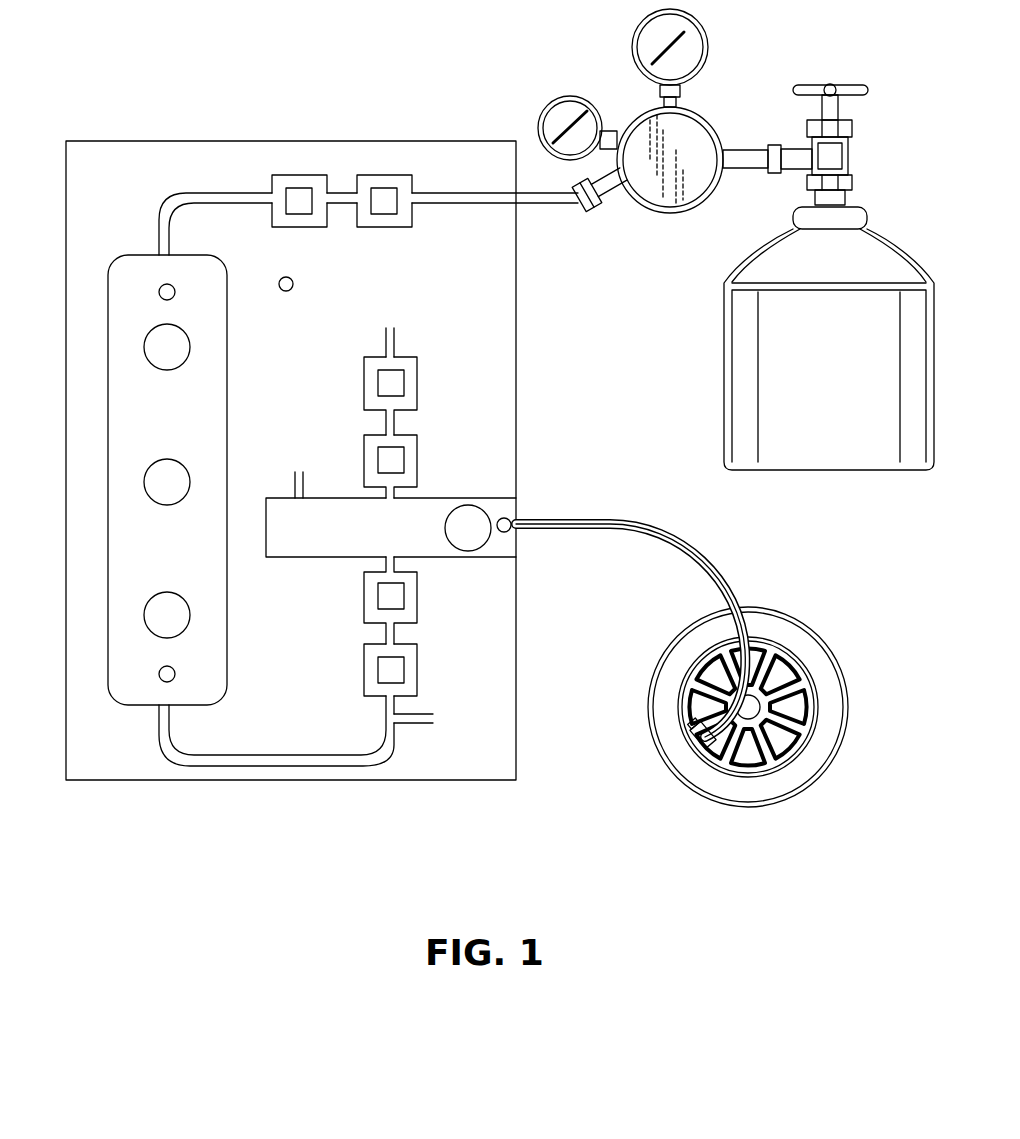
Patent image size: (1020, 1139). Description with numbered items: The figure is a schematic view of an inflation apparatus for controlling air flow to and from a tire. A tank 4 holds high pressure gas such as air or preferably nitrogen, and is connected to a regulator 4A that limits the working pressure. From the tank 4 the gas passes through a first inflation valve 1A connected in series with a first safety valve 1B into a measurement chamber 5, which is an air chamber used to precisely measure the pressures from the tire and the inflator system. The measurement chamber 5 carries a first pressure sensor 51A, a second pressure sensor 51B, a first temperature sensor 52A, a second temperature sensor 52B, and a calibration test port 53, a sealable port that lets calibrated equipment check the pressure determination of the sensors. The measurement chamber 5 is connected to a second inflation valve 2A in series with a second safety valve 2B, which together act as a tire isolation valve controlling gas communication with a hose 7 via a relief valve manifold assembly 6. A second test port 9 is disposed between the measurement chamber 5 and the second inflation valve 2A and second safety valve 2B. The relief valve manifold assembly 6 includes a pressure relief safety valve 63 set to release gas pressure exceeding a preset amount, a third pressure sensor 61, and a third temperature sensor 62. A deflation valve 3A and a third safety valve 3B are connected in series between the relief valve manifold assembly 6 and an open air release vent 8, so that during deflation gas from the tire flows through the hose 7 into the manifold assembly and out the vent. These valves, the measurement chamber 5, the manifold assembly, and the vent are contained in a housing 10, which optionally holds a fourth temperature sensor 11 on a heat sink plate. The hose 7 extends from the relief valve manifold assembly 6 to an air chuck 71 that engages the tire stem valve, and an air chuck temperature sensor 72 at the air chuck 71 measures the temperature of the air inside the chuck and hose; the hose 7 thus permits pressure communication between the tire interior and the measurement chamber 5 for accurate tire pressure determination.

The first inflation valve 1A is at (382, 196).
The first safety valve 1B is at (297, 196).
The second inflation valve 2A is at (383, 674).
The second safety valve 2B is at (383, 601).
The deflation valve 3A is at (392, 461).
The third safety valve 3B is at (387, 381).
The tank 4 is at (797, 330).
The regulator 4A is at (665, 165).
The measurement chamber 5 is at (115, 285).
The first pressure sensor 51A is at (163, 357).
The second pressure sensor 51B is at (160, 608).
The first temperature sensor 52A is at (159, 294).
The second temperature sensor 52B is at (157, 673).
The calibration test port 53 is at (163, 477).
The relief valve manifold assembly 6 is at (316, 535).
The third pressure sensor 61 is at (482, 525).
The third temperature sensor 62 is at (505, 532).
The pressure relief safety valve 63 is at (298, 475).
The hose 7 is at (720, 568).
The air chuck 71 is at (702, 748).
The air chuck temperature sensor 72 is at (692, 724).
The open air release vent 8 is at (391, 345).
The second test port 9 is at (425, 718).
The housing 10 is at (490, 358).
The fourth temperature sensor 11 is at (294, 287).